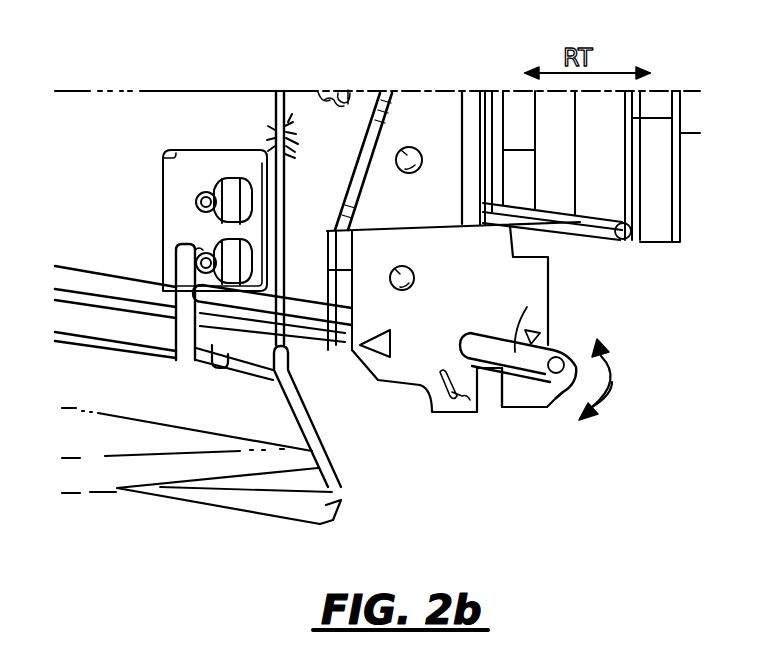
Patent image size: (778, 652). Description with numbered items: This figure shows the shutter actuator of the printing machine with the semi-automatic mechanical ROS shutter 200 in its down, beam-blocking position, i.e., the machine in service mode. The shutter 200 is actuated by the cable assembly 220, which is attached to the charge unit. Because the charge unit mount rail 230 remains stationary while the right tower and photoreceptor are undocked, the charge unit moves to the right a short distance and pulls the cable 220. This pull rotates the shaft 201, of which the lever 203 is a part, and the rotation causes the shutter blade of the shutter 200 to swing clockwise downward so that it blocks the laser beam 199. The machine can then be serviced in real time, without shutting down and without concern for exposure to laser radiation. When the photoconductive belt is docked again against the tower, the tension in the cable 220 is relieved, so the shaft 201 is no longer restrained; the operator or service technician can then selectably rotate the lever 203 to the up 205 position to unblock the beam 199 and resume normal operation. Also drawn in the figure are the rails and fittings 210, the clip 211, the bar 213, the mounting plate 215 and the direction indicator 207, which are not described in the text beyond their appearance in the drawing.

The laser beam 199 is at (106, 483).
The ROS shutter 200 is at (298, 417).
The shaft 201 is at (462, 304).
The lever 203 is at (520, 397).
The up position 205 is at (622, 363).
The rotation direction 207 is at (605, 416).
The rails 210 is at (174, 356).
The clip 211 is at (214, 352).
The bar 213 is at (178, 253).
The mounting plate 215 is at (164, 173).
The cable assembly 220 is at (285, 186).
The charge unit mount rail 230 is at (362, 107).